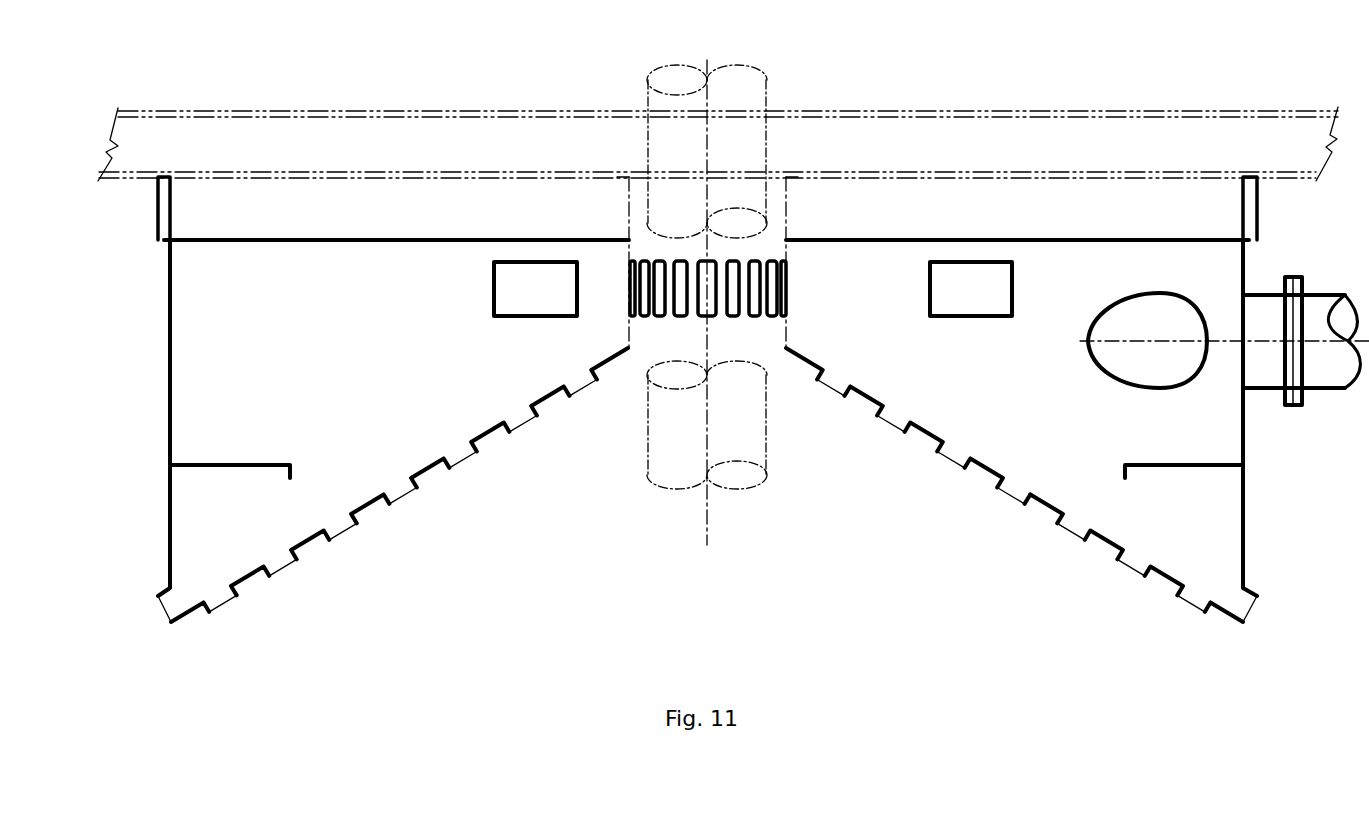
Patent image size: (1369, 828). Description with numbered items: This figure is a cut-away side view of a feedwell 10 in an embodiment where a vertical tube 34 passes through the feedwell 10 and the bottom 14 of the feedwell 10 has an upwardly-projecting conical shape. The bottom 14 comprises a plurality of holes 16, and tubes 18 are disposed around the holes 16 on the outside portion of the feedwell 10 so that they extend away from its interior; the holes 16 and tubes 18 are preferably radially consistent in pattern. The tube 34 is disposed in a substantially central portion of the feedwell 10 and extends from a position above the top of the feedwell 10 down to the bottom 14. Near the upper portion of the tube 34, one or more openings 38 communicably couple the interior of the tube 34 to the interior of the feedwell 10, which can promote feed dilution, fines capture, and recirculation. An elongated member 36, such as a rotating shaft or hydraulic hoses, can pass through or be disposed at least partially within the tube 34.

The feedwell 10 is at (960, 80).
The bottom 14 is at (365, 512).
The holes 16 is at (1068, 532).
The tubes 18 is at (1060, 522).
The tube 34 is at (784, 223).
The elongated member 36 is at (766, 422).
The openings 38 is at (660, 260).